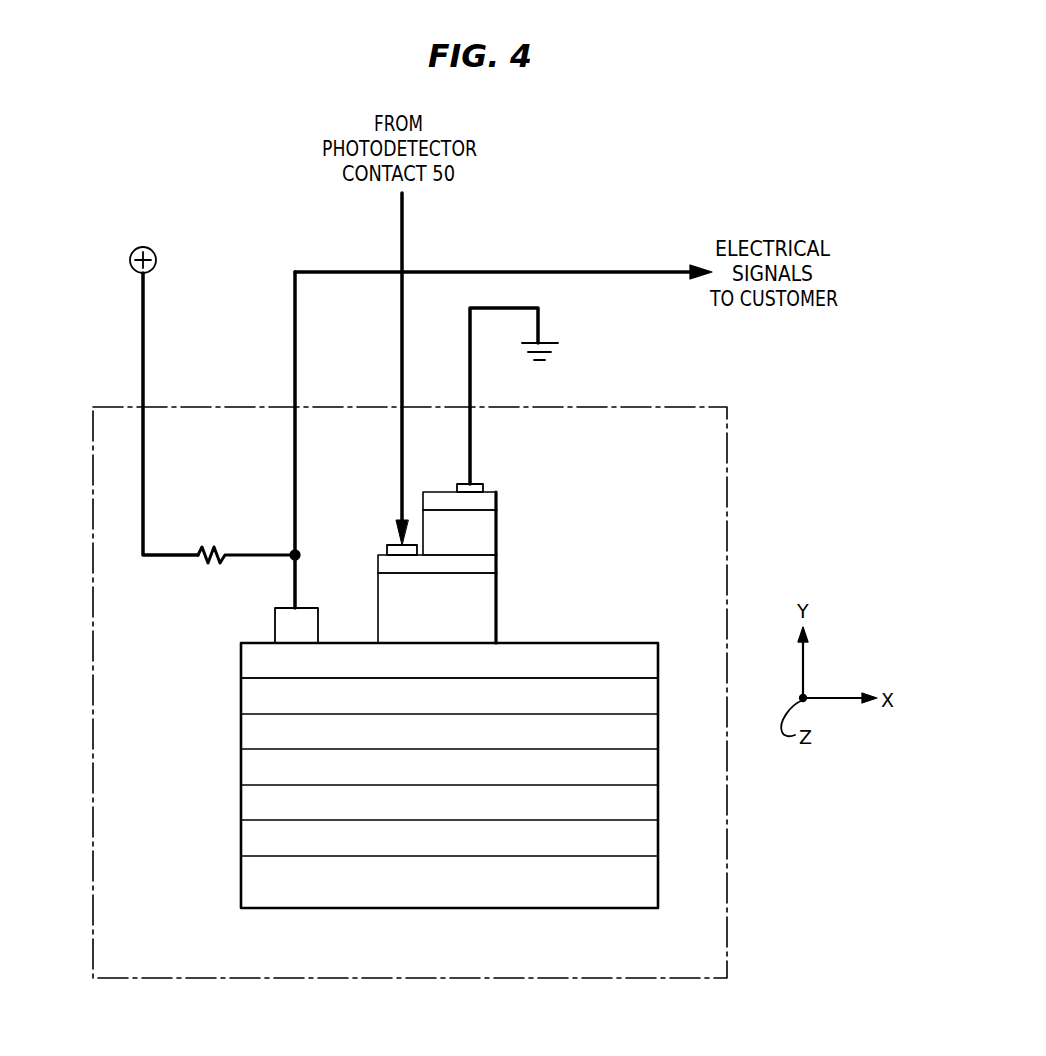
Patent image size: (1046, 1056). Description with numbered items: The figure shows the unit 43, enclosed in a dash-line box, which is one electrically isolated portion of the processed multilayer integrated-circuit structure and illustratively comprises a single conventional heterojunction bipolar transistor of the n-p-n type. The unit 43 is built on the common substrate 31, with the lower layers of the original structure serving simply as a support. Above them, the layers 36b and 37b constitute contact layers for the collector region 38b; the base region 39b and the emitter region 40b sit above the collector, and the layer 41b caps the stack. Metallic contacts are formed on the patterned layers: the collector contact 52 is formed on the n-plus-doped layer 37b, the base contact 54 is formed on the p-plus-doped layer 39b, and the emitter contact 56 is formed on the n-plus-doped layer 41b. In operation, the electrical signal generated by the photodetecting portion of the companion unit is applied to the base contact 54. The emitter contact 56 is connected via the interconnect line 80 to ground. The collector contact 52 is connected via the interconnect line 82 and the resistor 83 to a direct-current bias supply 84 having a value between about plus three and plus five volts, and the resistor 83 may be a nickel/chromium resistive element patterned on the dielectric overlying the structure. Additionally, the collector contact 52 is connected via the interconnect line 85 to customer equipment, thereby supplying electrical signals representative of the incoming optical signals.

The substrate 31 is at (266, 897).
The layer 36b is at (250, 697).
The layer 37b is at (250, 660).
The collector region 38b is at (489, 618).
The base region 39b is at (489, 563).
The emitter region 40b is at (488, 520).
The layer 41b is at (490, 497).
The unit 43 is at (93, 437).
The collector contact 52 is at (276, 622).
The base contact 54 is at (398, 545).
The emitter contact 56 is at (466, 485).
The interconnect line 80 is at (471, 330).
The interconnect line 82 is at (296, 593).
The resistor 83 is at (208, 548).
The direct-current bias supply 84 is at (143, 247).
The interconnect line 85 is at (533, 271).